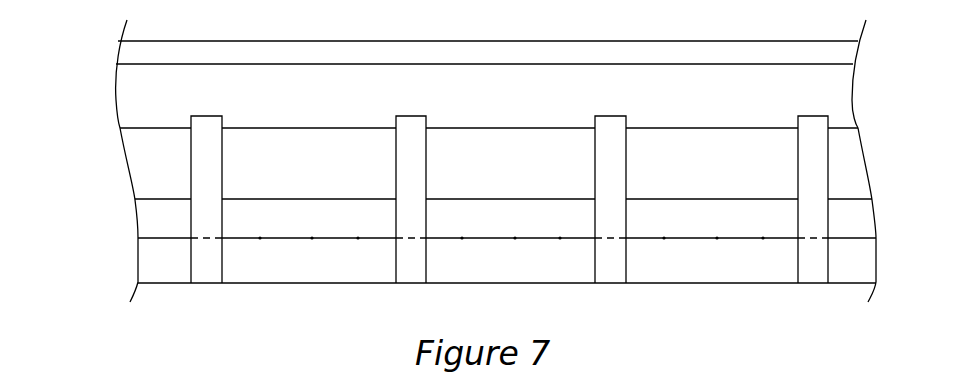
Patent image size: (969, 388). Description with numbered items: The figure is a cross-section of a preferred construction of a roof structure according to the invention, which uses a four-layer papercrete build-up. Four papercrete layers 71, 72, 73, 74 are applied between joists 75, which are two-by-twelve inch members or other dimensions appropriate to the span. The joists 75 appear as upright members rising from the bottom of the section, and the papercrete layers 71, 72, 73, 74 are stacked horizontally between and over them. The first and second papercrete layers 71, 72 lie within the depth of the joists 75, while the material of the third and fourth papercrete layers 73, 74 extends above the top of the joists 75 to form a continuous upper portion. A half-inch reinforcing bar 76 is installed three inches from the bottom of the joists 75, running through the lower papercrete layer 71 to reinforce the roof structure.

The papercrete layer 71 is at (148, 258).
The papercrete layer 72 is at (145, 178).
The papercrete layer 73 is at (116, 100).
The papercrete layer 74 is at (116, 53).
The joists 75 is at (213, 284).
The reinforcing bar 76 is at (763, 238).